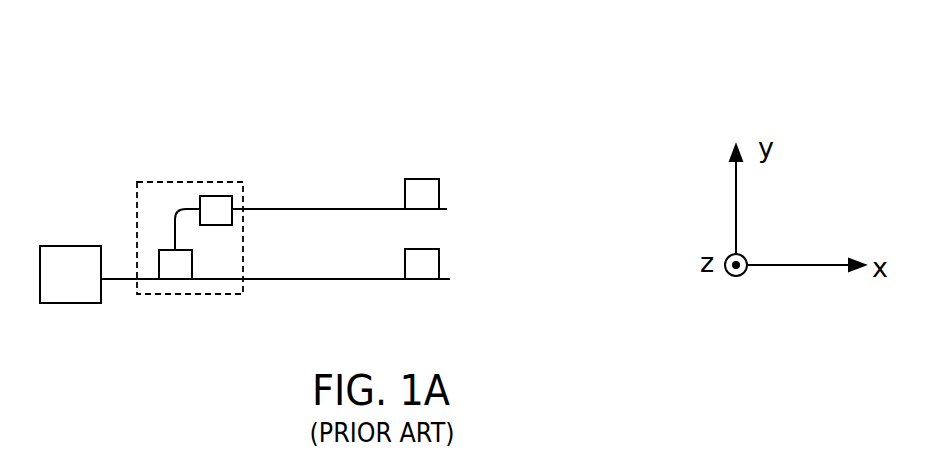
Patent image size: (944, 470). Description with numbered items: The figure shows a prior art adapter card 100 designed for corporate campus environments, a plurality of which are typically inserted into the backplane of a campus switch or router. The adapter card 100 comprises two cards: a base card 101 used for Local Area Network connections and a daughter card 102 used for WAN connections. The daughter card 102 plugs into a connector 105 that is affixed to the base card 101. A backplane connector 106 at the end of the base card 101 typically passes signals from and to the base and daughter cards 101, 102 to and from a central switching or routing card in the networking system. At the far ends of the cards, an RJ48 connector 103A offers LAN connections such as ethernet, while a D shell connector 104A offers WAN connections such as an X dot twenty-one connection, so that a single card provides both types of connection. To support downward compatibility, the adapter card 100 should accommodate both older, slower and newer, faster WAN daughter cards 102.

The adapter card 100 is at (497, 81).
The base card 101 is at (298, 281).
The daughter card 102 is at (303, 207).
The RJ48 connector 103A is at (425, 263).
The D shell connector 104A is at (425, 193).
The connector 105 is at (157, 201).
The backplane connector 106 is at (63, 257).